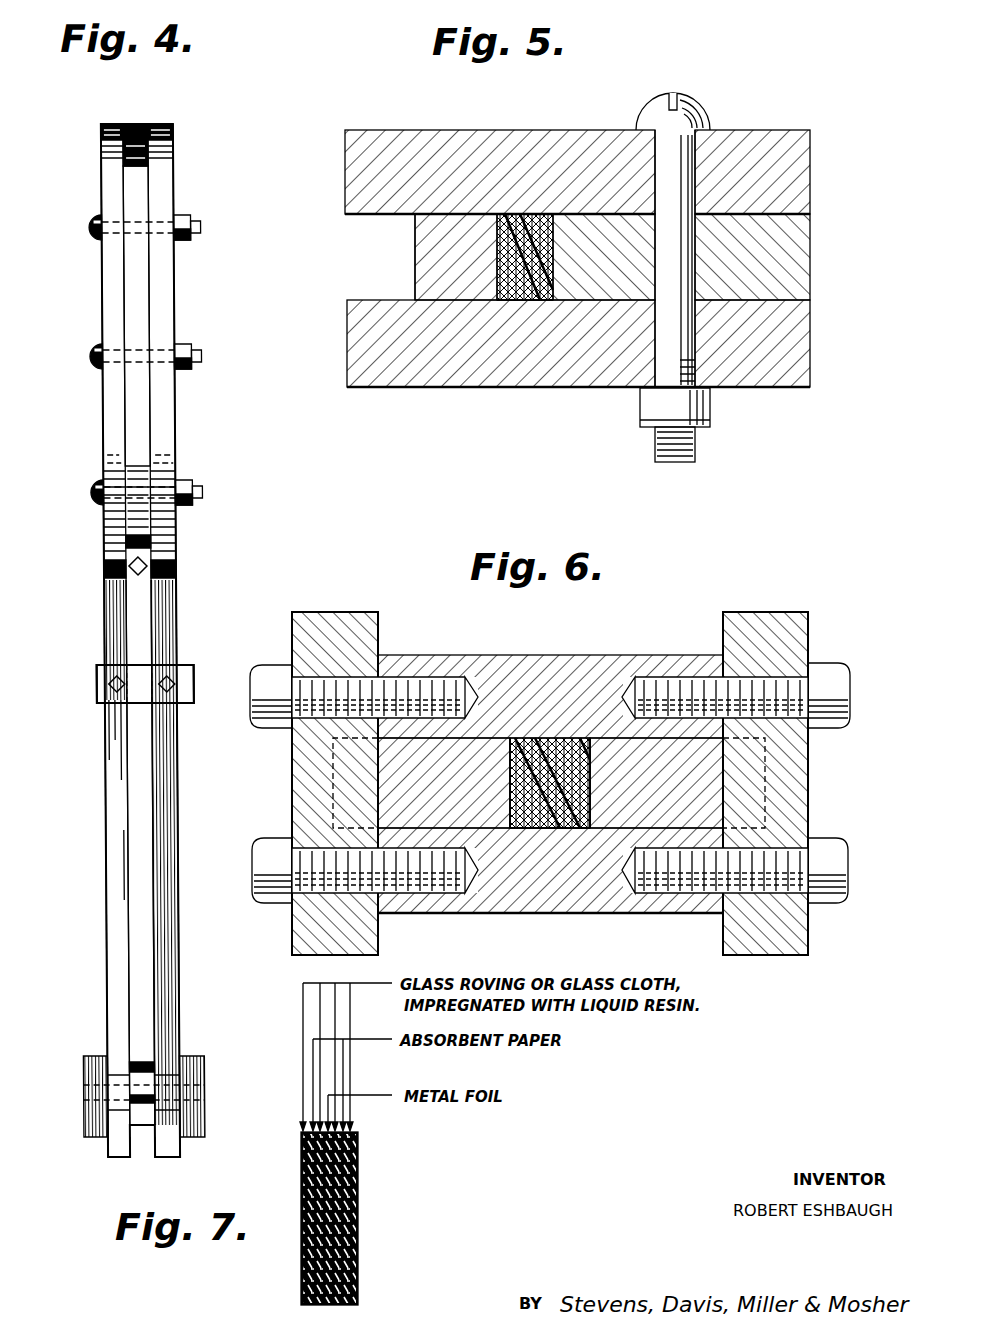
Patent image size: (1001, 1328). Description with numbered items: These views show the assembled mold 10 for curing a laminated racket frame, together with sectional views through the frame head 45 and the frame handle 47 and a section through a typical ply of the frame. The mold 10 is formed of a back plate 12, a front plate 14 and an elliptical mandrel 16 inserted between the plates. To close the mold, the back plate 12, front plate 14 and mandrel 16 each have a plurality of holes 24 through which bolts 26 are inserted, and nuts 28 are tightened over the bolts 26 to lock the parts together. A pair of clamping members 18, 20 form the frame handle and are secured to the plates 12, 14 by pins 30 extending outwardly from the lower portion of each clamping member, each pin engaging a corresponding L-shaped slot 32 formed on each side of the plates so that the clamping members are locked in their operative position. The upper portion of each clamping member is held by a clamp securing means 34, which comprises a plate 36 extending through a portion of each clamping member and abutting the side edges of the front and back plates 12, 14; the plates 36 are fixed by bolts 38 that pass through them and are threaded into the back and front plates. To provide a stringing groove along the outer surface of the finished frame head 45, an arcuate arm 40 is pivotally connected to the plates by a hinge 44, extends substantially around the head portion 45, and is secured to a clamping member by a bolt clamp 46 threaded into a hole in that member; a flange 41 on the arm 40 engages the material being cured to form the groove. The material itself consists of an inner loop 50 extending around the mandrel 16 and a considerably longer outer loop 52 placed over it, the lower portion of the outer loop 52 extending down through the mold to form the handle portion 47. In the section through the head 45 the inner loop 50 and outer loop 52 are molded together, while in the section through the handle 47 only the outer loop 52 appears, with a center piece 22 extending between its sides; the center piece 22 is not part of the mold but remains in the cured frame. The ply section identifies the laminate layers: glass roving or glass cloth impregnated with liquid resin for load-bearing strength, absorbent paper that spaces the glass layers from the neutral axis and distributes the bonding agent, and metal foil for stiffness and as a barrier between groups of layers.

In FIG. 4, the mold 10 is at (176, 153).
In FIG. 4, the back plate 12 is at (114, 430).
In FIG. 5, the back plate 12 is at (391, 130).
In FIG. 6, the back plate 12 is at (568, 668).
In FIG. 4, the front plate 14 is at (164, 421).
In FIG. 5, the front plate 14 is at (397, 387).
In FIG. 6, the front plate 14 is at (568, 895).
In FIG. 5, the mandrel 16 is at (794, 252).
In FIG. 4, the clamping member 18 is at (140, 888).
In FIG. 6, the clamping member 18 is at (388, 789).
In FIG. 6, the clamping member 20 is at (705, 781).
In FIG. 6, the center piece 22 is at (552, 740).
In FIG. 5, the holes 24 is at (645, 350).
In FIG. 4, the bolts 26 is at (200, 224).
In FIG. 5, the bolts 26 is at (690, 110).
In FIG. 4, the nuts 28 is at (190, 214).
In FIG. 5, the nuts 28 is at (713, 403).
In FIG. 4, the pins 30 is at (158, 1157).
In FIG. 4, the L-shaped slot 32 is at (94, 1086).
In FIG. 4, the clamp securing means 34 is at (93, 667).
In FIG. 6, the clamp securing means 34 is at (312, 611).
In FIG. 4, the plate 36 is at (92, 692).
In FIG. 6, the plate 36 is at (305, 634).
In FIG. 4, the bolts 38 is at (160, 690).
In FIG. 6, the bolts 38 is at (252, 716).
In FIG. 4, the arcuate shaped arm 40 is at (140, 302).
In FIG. 5, the arcuate shaped arm 40 is at (430, 240).
In FIG. 5, the flange 41 is at (500, 262).
In FIG. 4, the hinge 44 is at (135, 124).
In FIG. 5, the frame head 45 is at (530, 212).
In FIG. 4, the bolt clamp 46 is at (105, 564).
In FIG. 6, the handle portion 47 is at (506, 789).
In FIG. 5, the inner loop 50 is at (558, 268).
In FIG. 5, the outer loop 52 is at (505, 300).
In FIG. 6, the outer loop 52 is at (590, 788).